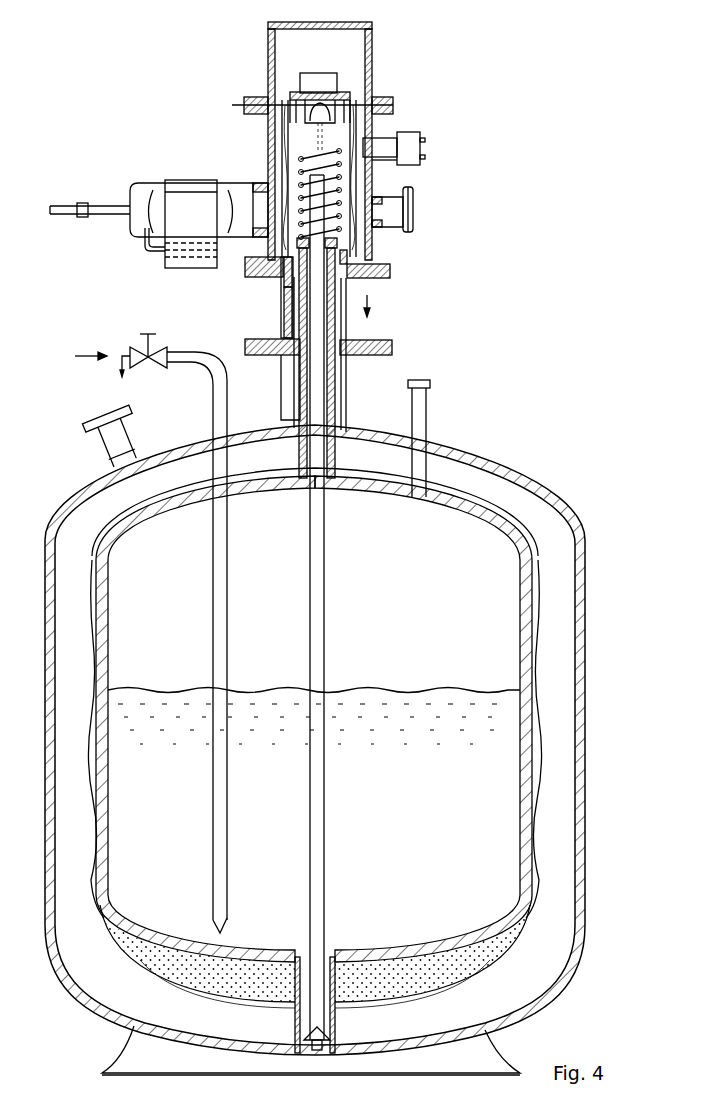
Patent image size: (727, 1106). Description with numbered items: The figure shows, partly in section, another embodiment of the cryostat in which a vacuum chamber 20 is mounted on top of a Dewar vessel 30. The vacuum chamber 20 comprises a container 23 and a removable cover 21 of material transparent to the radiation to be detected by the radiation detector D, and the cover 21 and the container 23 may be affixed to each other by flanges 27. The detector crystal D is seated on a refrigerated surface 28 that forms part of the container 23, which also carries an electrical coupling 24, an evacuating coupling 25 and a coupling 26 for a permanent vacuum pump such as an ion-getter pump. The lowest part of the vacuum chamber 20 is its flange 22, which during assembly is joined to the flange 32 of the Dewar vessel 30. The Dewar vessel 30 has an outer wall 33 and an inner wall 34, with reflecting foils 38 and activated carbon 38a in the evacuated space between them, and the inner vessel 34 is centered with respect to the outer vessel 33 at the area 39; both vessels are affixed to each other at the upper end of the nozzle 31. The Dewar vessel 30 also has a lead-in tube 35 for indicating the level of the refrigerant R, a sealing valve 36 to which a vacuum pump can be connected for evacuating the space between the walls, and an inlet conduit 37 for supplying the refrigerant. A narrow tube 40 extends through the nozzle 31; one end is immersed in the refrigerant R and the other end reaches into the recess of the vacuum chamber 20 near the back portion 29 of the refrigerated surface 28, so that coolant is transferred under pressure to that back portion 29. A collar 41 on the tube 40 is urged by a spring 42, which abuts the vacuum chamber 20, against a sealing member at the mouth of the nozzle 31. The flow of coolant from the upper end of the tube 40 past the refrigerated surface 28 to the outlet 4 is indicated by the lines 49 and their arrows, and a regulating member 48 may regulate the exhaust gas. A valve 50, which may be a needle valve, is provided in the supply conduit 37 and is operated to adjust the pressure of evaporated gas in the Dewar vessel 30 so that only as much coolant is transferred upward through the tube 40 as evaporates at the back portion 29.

The vacuum chamber 20 is at (409, 42).
The removable cover 21 is at (268, 32).
The radiation detector D is at (302, 83).
The refrigerated surface 28 is at (340, 93).
The back portion 29 is at (306, 116).
The flanges 27 is at (300, 105).
The electrical coupling 24 is at (409, 133).
The container 23 is at (374, 165).
The spring 42 is at (336, 205).
The evacuating coupling 25 is at (413, 213).
The collar 41 is at (340, 243).
The flange 22 is at (388, 272).
The lines 49 is at (286, 285).
The nozzle 31 is at (292, 322).
The regulating member 48 is at (252, 340).
The flange 32 is at (392, 347).
The outlet 4 is at (282, 360).
The coupling 26 is at (192, 187).
The valve 50 is at (132, 350).
The inlet conduit 37 is at (214, 403).
The lead-in tube 35 is at (427, 403).
The sealing valve 36 is at (113, 416).
The tube 40 is at (325, 614).
The Dewar vessel 30 is at (329, 661).
The outer wall 33 is at (580, 815).
The inner wall 34 is at (522, 815).
The refrigerant R is at (401, 781).
The reflecting foils 38 is at (487, 946).
The activated carbon 38a is at (452, 986).
The area 39 is at (336, 1030).